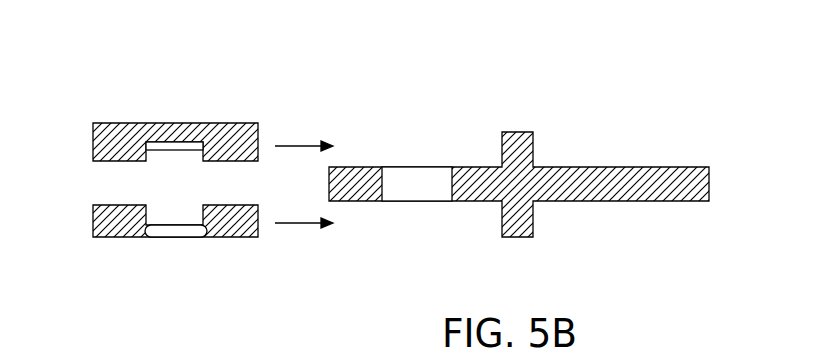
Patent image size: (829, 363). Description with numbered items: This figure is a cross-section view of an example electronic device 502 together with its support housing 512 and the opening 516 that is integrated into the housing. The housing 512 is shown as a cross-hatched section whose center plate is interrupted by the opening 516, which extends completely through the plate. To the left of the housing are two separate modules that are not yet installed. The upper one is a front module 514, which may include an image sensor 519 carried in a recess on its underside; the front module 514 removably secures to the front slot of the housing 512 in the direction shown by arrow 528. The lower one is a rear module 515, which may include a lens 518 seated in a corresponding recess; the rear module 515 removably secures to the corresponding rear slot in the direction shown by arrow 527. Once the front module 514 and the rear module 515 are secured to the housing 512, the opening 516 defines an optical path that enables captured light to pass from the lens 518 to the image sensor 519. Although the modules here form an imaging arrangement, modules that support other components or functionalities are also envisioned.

The electronic device 502 is at (451, 88).
The support housing 512 is at (518, 131).
The front module 514 is at (177, 122).
The rear module 515 is at (100, 204).
The opening 516 is at (424, 202).
The lens 518 is at (175, 236).
The image sensor 519 is at (177, 155).
The arrow 527 is at (306, 225).
The arrow 528 is at (296, 145).